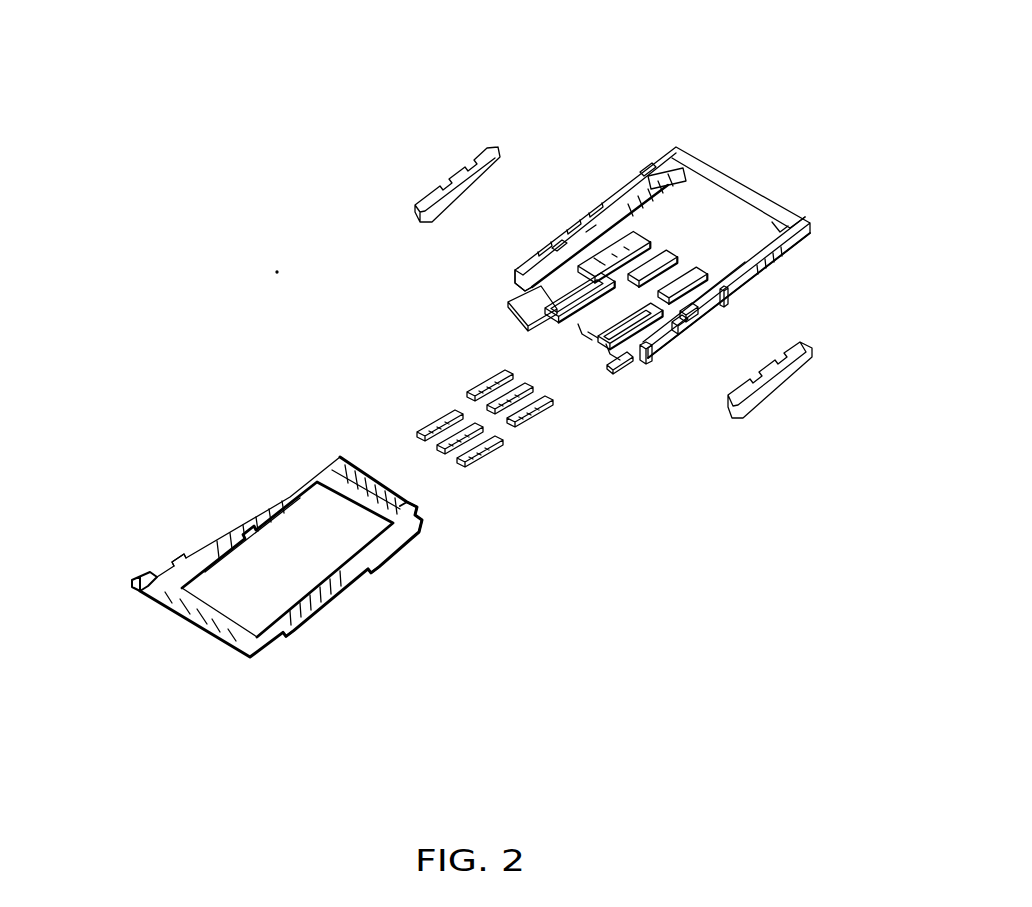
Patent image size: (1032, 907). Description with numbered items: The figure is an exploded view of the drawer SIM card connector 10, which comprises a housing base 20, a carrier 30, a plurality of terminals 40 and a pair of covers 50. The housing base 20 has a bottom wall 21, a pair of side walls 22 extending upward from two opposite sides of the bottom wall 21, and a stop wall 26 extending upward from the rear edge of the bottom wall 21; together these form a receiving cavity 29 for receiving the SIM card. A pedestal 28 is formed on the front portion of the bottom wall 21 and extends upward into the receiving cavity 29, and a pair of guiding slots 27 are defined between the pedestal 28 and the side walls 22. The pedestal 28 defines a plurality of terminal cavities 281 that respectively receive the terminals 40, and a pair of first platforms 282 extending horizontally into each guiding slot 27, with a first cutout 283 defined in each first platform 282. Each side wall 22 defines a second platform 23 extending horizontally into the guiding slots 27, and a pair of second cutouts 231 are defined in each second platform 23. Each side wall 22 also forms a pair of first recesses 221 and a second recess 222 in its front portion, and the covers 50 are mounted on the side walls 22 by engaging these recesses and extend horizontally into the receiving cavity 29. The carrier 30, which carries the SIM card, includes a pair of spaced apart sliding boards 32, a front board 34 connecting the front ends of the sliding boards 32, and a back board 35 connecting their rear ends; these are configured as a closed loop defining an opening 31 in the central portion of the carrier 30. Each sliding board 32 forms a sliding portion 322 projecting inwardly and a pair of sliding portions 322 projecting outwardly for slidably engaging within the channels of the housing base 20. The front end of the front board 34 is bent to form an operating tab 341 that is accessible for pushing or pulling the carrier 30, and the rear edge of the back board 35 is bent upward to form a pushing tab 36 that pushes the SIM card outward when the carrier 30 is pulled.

The drawer SIM card connector 10 is at (195, 40).
The housing base 20 is at (808, 222).
The bottom wall 21 is at (686, 186).
The side walls 22 is at (622, 190).
The first recesses 221 is at (593, 250).
The second recess 222 is at (552, 247).
The second platform 23 is at (513, 280).
The second cutouts 231 is at (643, 169).
The stop wall 26 is at (743, 183).
The guiding slots 27 is at (522, 284).
The pedestal 28 is at (560, 325).
The terminal cavities 281 is at (595, 332).
The first platforms 282 is at (597, 260).
The first cutout 283 is at (588, 230).
The receiving cavity 29 is at (745, 215).
The carrier 30 is at (250, 659).
The opening 31 is at (217, 593).
The sliding boards 32 is at (218, 547).
The sliding portions 322 is at (303, 463).
The front board 34 is at (203, 630).
The operating tab 341 is at (130, 580).
The back board 35 is at (420, 509).
The pushing tab 36 is at (377, 478).
The terminals 40 is at (473, 458).
The covers 50 is at (415, 206).